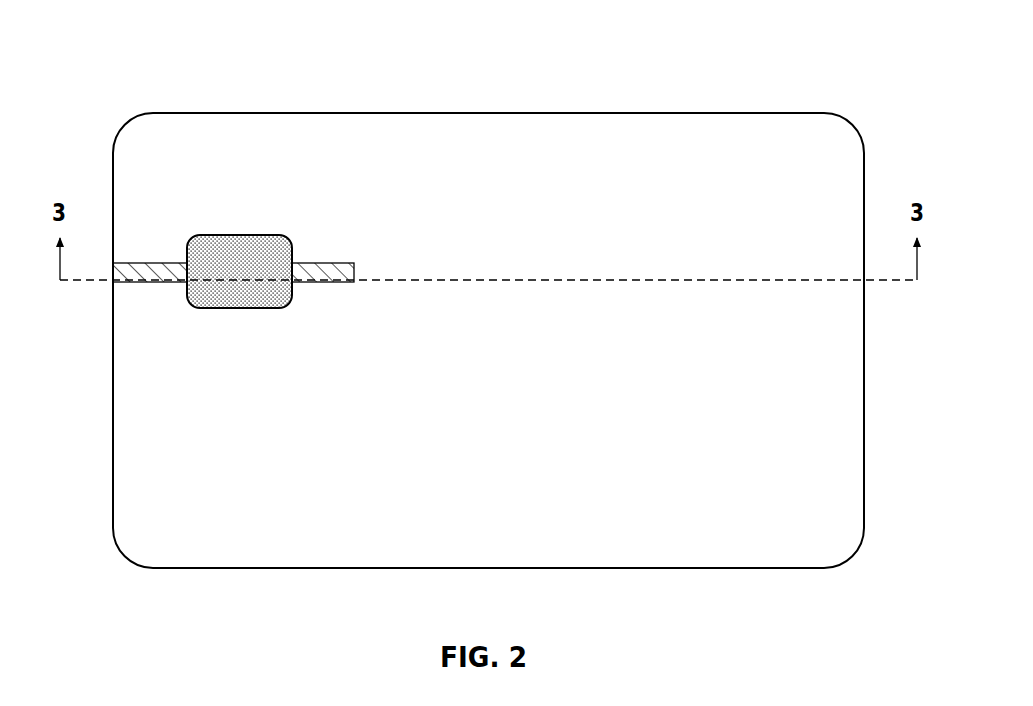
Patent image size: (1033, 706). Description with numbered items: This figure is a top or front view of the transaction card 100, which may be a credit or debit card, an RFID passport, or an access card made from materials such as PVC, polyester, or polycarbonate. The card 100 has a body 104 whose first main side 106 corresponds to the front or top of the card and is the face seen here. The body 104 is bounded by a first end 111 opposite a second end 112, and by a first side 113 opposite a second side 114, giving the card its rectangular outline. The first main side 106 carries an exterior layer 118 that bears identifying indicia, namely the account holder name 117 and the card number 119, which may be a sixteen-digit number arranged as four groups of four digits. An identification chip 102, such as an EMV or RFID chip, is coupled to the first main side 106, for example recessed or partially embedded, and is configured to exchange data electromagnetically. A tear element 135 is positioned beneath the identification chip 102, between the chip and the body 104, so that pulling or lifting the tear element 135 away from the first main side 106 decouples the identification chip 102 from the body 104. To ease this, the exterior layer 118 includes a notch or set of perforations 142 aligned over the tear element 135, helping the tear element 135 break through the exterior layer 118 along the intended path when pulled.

The transaction card 100 is at (118, 46).
The identification chip 102 is at (237, 243).
The body 104 is at (796, 128).
The first main side 106 is at (630, 128).
The first end 111 is at (110, 373).
The second end 112 is at (866, 357).
The first side 113 is at (418, 113).
The second side 114 is at (675, 570).
The account holder name 117 is at (243, 538).
The exterior layer 118 is at (615, 211).
The card number 119 is at (576, 376).
The tear element 135 is at (330, 263).
The set of perforations 142 is at (127, 263).